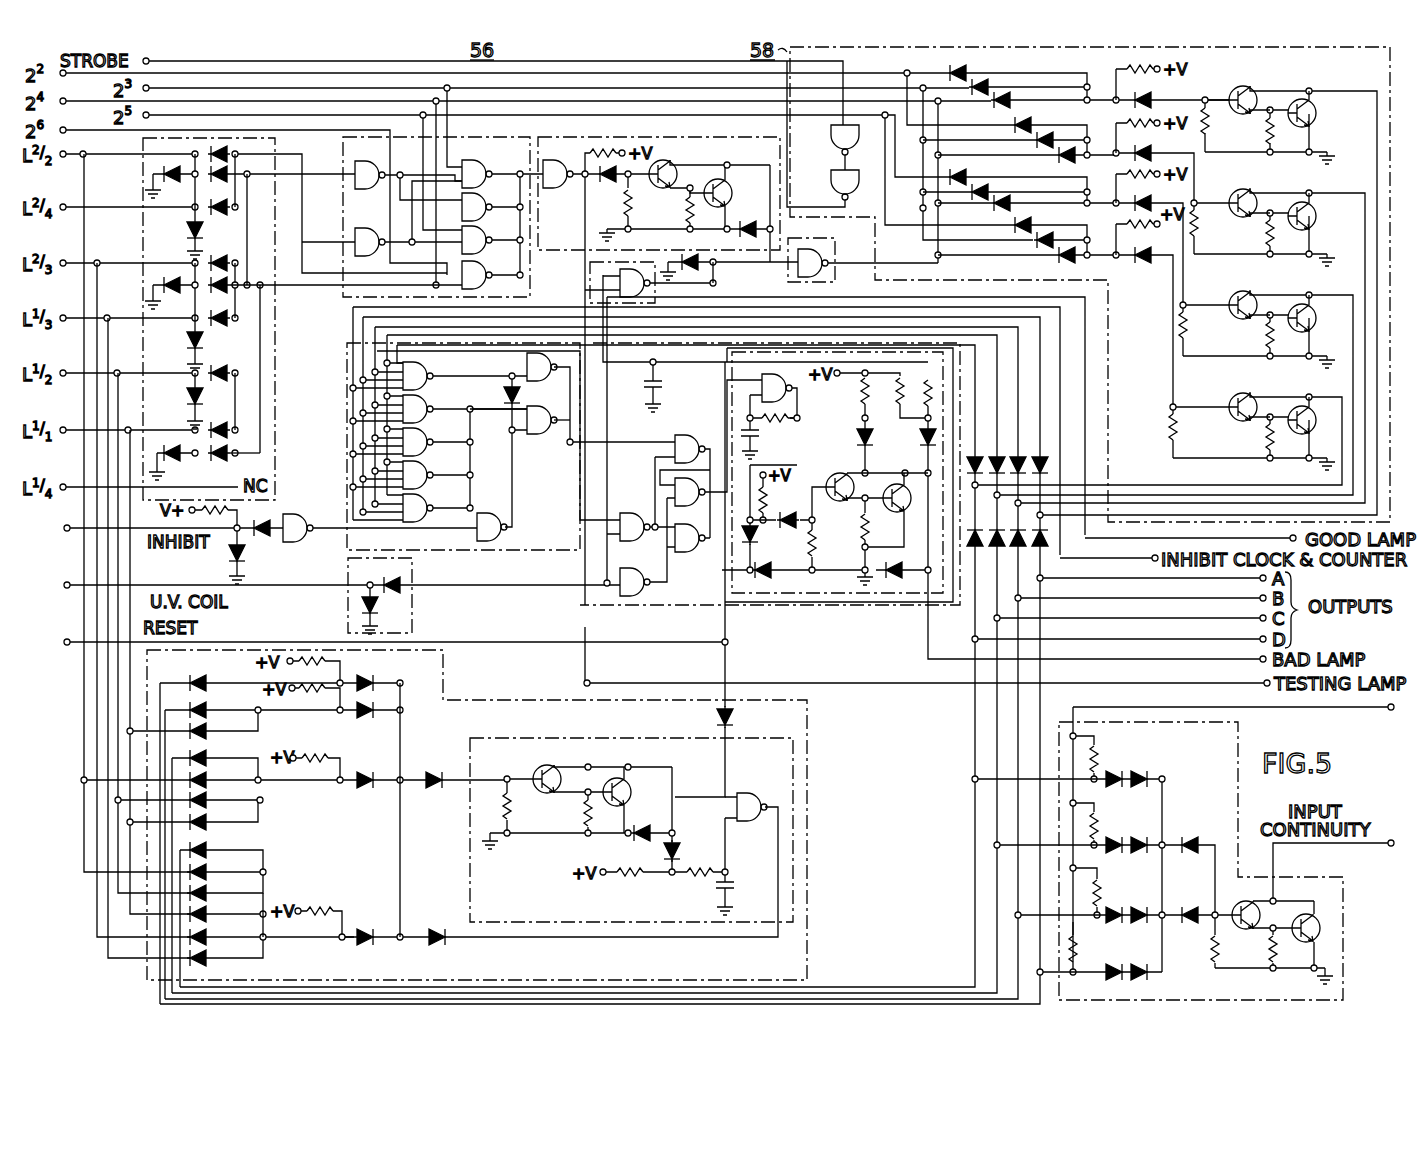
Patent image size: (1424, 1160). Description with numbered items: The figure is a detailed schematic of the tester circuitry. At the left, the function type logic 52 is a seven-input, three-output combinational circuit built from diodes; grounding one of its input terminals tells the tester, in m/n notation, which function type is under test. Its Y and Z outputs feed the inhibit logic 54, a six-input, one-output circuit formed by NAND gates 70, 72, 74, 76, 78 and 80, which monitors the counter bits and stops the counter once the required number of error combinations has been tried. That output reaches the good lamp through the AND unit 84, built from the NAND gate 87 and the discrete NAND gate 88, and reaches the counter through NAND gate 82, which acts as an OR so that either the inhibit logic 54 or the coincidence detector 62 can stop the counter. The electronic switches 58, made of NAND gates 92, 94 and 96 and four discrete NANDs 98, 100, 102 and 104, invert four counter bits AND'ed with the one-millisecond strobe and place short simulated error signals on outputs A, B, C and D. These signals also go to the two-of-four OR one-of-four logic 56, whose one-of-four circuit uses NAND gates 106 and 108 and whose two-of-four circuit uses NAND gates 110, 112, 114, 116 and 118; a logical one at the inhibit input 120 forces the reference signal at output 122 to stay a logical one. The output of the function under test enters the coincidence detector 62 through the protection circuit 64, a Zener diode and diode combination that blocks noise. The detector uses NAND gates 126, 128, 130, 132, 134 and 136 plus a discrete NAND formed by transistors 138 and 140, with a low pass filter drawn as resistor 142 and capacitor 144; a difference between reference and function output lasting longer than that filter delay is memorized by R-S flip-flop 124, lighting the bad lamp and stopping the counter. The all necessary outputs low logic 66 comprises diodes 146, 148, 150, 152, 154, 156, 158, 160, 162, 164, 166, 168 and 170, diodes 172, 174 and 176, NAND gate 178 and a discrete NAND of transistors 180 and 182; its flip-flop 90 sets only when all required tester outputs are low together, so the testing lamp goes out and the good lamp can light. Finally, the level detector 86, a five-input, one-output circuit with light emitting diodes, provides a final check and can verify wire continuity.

The function type logic 52 is at (276, 392).
The inhibit logic 54 is at (343, 196).
The 2/4 OR 1/4 logic 56 is at (350, 434).
The electronic switches 58 is at (1070, 280).
The coincidence detector 62 is at (848, 620).
The protection circuit 64 is at (413, 607).
The all necessary outputs low logic 66 is at (468, 707).
The NAND gate 70 is at (376, 161).
The NAND gate 72 is at (376, 227).
The NAND gate 74 is at (476, 165).
The NAND gate 76 is at (478, 201).
The NAND gate 78 is at (478, 234).
The NAND gate 80 is at (478, 267).
The NAND gate 82 is at (658, 297).
The AND unit 84 is at (568, 136).
The level detector 86 is at (1343, 960).
The NAND gate 87 is at (563, 184).
The discrete NAND gate 88 is at (688, 169).
The flip-flop 90 is at (488, 734).
The NAND gate 92 is at (830, 241).
The NAND gate 94 is at (830, 133).
The NAND gate 96 is at (830, 184).
The discrete NAND 98 is at (1008, 80).
The discrete NAND 100 is at (1058, 137).
The discrete NAND 102 is at (1008, 183).
The discrete NAND 104 is at (1003, 257).
The NAND gate 106 is at (424, 376).
The NAND gate 108 is at (530, 368).
The NAND gate 110 is at (425, 404).
The NAND gate 112 is at (423, 437).
The NAND gate 114 is at (423, 470).
The NAND gate 116 is at (425, 504).
The NAND gate 118 is at (552, 416).
The inhibit input 120 is at (66, 531).
The output 122 is at (567, 446).
The R-S flip-flop 124 is at (722, 388).
The NAND gate 126 is at (640, 518).
The NAND gate 128 is at (645, 590).
The NAND gate 130 is at (686, 436).
The NAND gate 132 is at (692, 551).
The NAND gate 134 is at (692, 505).
The NAND gate 136 is at (762, 396).
The transistor 138 is at (837, 474).
The transistor 140 is at (892, 473).
The resistor 142 is at (790, 416).
The capacitor 144 is at (752, 450).
The diode 146 is at (200, 675).
The diode 148 is at (208, 712).
The diode 150 is at (208, 733).
The diode 152 is at (208, 760).
The diode 154 is at (208, 782).
The diode 156 is at (208, 802).
The diode 158 is at (208, 824).
The diode 160 is at (208, 852).
The diode 162 is at (208, 874).
The diode 164 is at (208, 895).
The diode 166 is at (208, 916).
The diode 168 is at (208, 939).
The diode 170 is at (208, 960).
The diode 172 is at (359, 680).
The diode 174 is at (364, 722).
The diode 176 is at (364, 797).
The NAND gate 178 is at (753, 803).
The transistor 180 is at (534, 769).
The transistor 182 is at (611, 773).